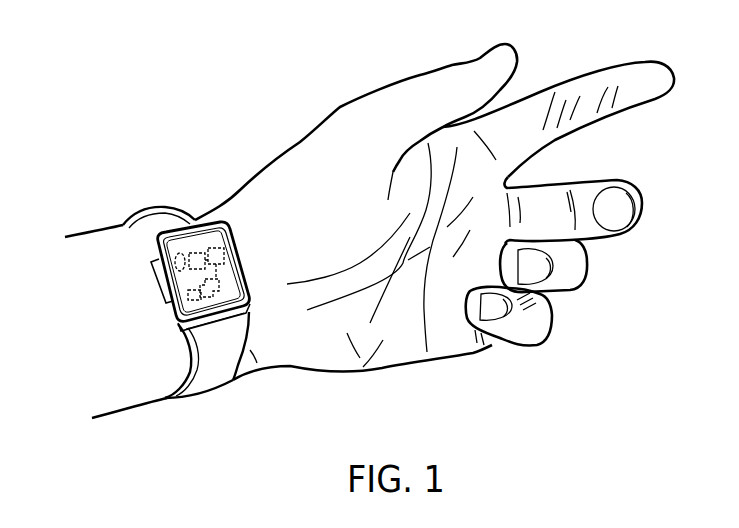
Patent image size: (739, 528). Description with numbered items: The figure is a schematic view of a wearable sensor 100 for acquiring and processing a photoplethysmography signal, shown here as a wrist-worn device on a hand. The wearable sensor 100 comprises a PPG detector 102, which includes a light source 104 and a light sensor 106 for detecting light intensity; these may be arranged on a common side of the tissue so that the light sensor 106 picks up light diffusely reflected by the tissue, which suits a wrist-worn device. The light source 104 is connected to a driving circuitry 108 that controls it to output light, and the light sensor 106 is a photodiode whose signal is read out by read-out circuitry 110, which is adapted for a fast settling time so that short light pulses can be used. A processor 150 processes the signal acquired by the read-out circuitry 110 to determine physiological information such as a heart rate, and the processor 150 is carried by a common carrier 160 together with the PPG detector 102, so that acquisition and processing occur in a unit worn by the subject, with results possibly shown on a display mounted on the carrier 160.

The wearable sensor 100 is at (152, 162).
The PPG detector 102 is at (155, 280).
The light source 104 is at (160, 250).
The light sensor 106 is at (196, 296).
The driving circuitry 108 is at (195, 252).
The read-out circuitry 110 is at (216, 292).
The processor 150 is at (222, 258).
The carrier 160 is at (228, 221).